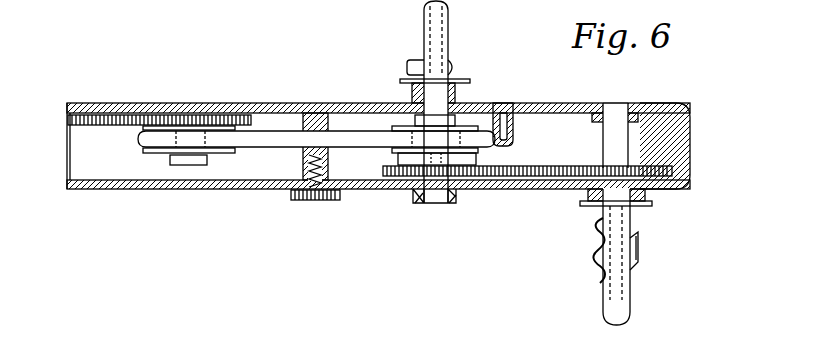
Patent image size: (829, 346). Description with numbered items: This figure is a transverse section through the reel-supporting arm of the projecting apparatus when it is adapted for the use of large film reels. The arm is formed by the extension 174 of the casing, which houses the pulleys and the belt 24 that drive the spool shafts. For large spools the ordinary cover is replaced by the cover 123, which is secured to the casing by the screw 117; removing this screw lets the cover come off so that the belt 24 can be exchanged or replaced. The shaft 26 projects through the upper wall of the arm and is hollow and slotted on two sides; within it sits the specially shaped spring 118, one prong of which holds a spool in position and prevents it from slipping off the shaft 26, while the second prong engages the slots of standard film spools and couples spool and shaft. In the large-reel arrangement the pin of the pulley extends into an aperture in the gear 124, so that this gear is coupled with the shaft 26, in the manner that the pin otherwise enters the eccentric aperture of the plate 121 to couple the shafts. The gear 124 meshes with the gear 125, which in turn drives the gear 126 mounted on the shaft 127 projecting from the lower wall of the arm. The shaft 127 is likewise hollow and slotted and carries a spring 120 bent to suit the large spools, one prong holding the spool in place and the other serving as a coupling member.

The belt 24 is at (279, 146).
The shaft 26 is at (436, 102).
The screw 117 is at (311, 201).
The spring 118 is at (425, 24).
The spring 120 is at (598, 281).
The plate 121 is at (396, 157).
The cover 123 is at (381, 156).
The gear 124 is at (398, 190).
The gear 125 is at (522, 188).
The gear 126 is at (674, 171).
The shaft 127 is at (627, 257).
The extension 174 is at (516, 74).